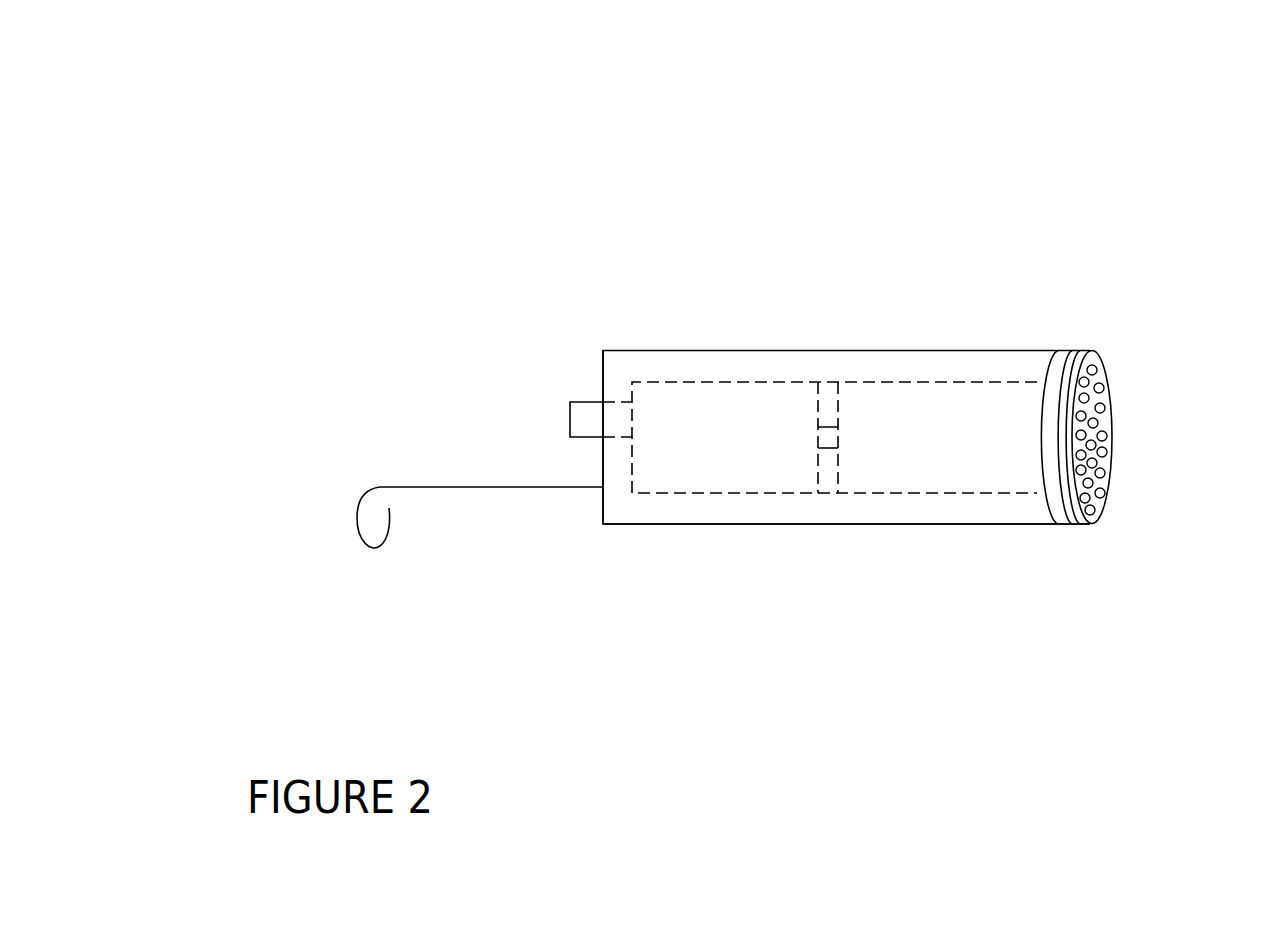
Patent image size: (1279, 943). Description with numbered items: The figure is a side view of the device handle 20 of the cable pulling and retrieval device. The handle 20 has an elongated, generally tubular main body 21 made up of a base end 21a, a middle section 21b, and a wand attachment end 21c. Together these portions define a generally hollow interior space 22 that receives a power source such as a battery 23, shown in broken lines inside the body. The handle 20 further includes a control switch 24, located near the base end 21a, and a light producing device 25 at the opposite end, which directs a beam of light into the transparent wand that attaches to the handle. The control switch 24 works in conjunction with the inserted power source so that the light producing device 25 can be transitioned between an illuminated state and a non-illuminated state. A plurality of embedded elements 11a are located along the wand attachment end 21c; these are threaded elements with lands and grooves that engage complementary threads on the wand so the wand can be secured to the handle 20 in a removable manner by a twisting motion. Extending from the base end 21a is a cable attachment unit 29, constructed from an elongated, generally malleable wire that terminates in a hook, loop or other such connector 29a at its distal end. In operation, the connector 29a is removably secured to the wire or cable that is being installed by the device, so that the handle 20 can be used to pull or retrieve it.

The device handle 20 is at (343, 157).
The main body 21 is at (833, 376).
The base end 21a is at (603, 372).
The middle section 21b is at (847, 525).
The wand attachment end 21c is at (1125, 443).
The hollow interior space 22 is at (913, 360).
The battery 23 is at (723, 493).
The control switch 24 is at (570, 417).
The light producing device 25 is at (1104, 384).
The embedded elements 11a is at (1066, 350).
The cable attachment unit 29 is at (518, 487).
The connector 29a is at (357, 505).